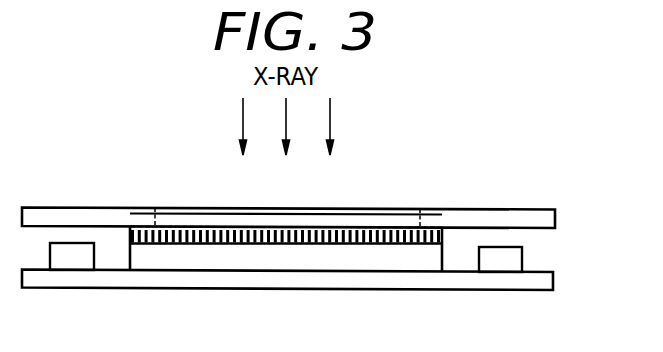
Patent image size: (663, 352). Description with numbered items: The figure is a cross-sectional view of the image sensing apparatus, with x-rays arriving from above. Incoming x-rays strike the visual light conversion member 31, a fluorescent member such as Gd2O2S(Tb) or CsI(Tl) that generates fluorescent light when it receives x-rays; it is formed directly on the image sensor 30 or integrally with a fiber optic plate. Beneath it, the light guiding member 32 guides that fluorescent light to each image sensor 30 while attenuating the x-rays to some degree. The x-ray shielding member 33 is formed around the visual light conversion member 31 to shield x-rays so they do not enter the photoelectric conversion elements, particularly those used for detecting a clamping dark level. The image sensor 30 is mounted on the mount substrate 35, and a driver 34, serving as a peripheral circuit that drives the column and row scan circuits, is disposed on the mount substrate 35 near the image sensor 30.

The image sensor 30 is at (138, 261).
The visual light conversion member 31 is at (410, 210).
The light guiding member 32 is at (445, 236).
The x-ray shielding member 33 is at (60, 212).
The driver 34 is at (515, 262).
The mount substrate 35 is at (435, 282).